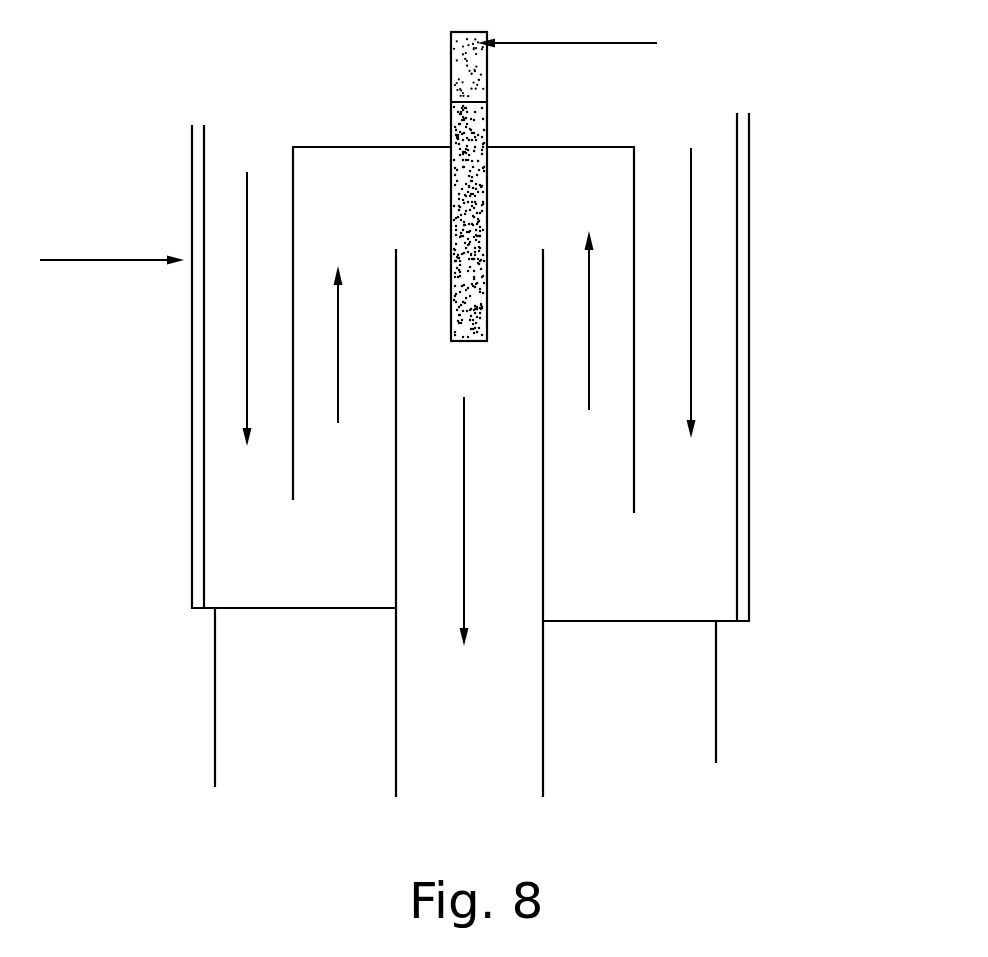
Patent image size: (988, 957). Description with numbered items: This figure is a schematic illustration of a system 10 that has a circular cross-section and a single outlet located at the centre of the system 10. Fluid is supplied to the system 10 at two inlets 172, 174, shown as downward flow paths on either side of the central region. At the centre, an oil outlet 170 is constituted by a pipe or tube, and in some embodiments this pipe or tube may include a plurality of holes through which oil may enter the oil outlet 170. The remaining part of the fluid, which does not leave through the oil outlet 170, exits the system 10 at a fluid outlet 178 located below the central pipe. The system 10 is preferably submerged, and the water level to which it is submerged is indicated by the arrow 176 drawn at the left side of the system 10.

The system 10 is at (150, 176).
The oil outlet 170 is at (470, 81).
The inlet 172 is at (251, 163).
The inlet 174 is at (690, 132).
The water level arrow 176 is at (96, 266).
The fluid outlet 178 is at (470, 668).